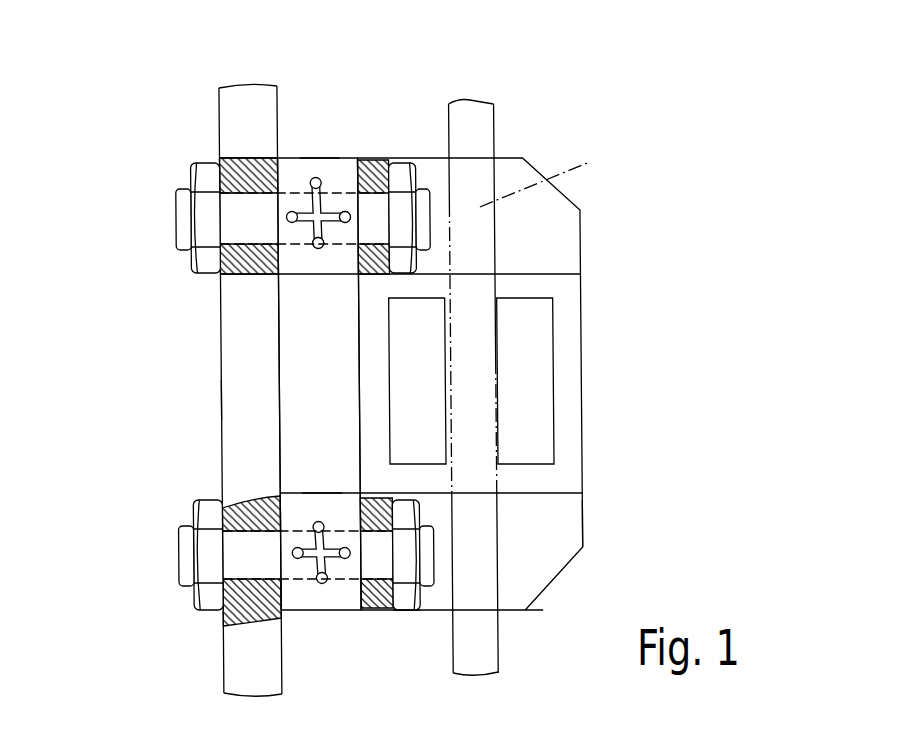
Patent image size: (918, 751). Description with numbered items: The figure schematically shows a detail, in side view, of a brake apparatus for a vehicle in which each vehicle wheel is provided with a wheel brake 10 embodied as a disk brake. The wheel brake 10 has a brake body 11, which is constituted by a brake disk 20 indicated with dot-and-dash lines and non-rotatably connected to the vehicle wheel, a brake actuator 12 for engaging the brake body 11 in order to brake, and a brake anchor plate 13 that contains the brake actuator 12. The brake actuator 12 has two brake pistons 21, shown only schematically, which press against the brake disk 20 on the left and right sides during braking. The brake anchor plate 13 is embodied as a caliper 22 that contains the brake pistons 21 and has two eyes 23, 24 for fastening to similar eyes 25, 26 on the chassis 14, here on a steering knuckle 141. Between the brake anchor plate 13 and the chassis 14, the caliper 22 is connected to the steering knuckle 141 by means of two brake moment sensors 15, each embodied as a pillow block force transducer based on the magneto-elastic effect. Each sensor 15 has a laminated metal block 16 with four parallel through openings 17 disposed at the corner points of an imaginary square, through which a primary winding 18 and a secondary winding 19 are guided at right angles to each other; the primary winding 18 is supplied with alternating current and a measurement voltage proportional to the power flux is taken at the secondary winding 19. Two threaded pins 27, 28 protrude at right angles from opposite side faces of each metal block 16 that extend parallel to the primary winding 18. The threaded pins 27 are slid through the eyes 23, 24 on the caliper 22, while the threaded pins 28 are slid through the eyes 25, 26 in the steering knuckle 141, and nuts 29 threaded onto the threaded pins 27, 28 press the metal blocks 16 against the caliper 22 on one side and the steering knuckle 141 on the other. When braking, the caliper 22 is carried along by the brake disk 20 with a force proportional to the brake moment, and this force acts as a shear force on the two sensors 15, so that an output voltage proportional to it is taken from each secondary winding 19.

The wheel brake 10 is at (505, 117).
The brake body 11 is at (498, 133).
The brake actuator 12 is at (557, 305).
The brake anchor plate 13 is at (585, 520).
The chassis 14 is at (223, 365).
The steering knuckle 141 is at (247, 403).
The brake moment sensor 15 is at (329, 156).
The metal block 16 is at (327, 262).
The through openings 17 is at (316, 178).
The primary winding 18 is at (338, 192).
The secondary winding 19 is at (303, 258).
The brake disk 20 is at (592, 163).
The brake pistons 21 is at (532, 358).
The caliper 22 is at (532, 547).
The eye 23 is at (399, 180).
The eye 24 is at (402, 613).
The eye 25 is at (219, 157).
The eye 26 is at (227, 627).
The threaded pin 27 is at (373, 227).
The threaded pin 28 is at (247, 222).
The nuts 29 is at (205, 178).